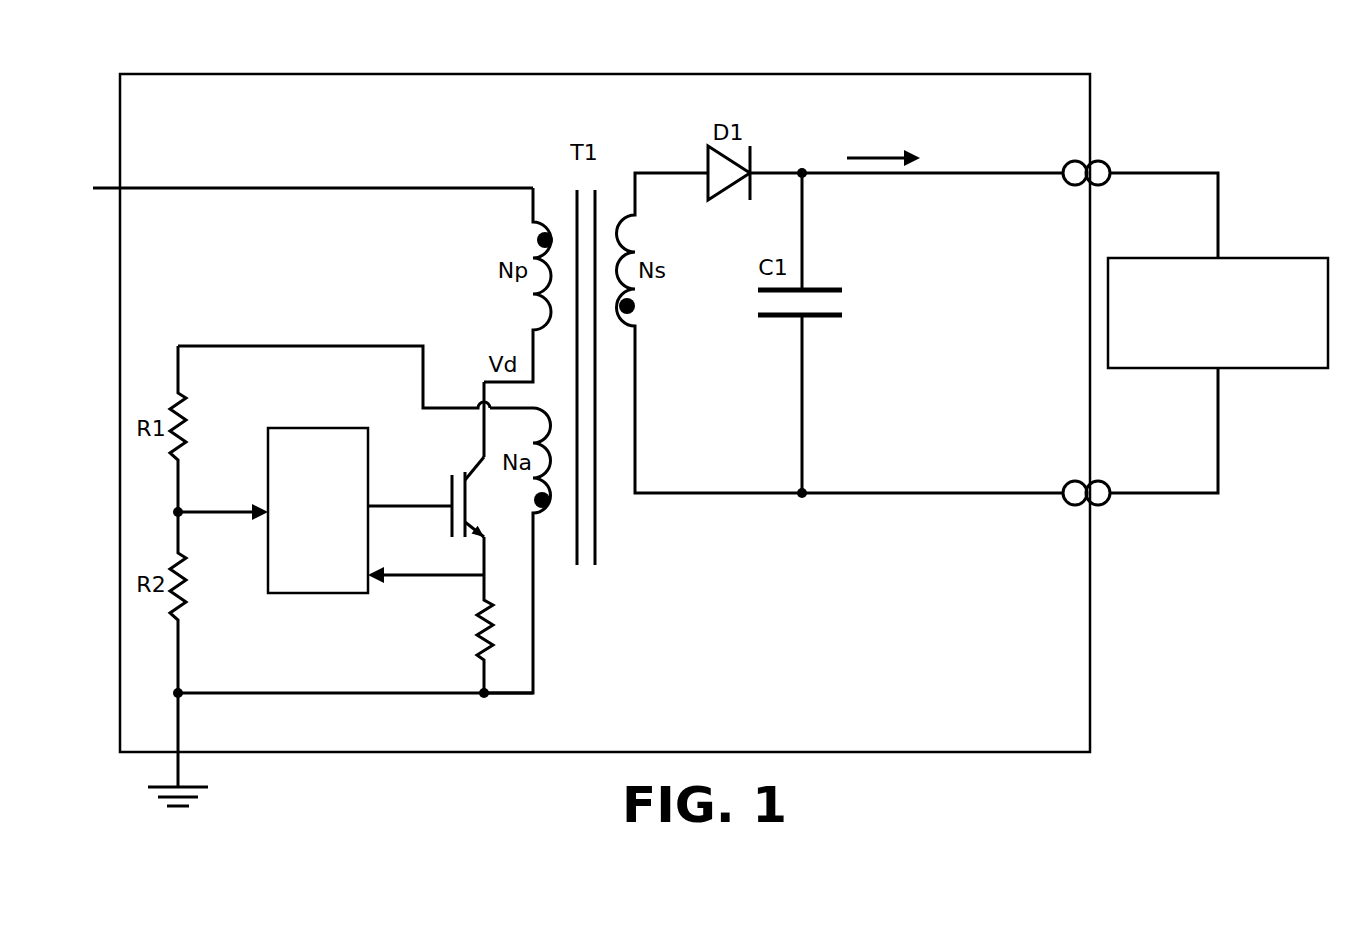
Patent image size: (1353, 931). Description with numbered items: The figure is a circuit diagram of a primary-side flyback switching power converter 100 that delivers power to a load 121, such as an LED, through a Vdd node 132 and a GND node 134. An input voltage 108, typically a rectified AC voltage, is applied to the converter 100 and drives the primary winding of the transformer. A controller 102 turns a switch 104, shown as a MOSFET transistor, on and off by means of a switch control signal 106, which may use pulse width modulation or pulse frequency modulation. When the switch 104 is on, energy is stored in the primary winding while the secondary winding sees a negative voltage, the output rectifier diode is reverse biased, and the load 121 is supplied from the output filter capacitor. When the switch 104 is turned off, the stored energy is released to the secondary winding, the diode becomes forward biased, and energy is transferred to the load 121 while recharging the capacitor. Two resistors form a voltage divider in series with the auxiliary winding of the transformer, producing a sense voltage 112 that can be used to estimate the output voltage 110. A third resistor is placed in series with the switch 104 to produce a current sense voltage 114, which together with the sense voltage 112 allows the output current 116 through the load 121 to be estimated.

The switching power converter 100 is at (605, 413).
The input voltage 108 is at (112, 188).
The controller 102 is at (318, 510).
The switch 104 is at (453, 479).
The switch control signal 106 is at (381, 509).
The sense voltage 112 is at (218, 505).
The current sense voltage 114 is at (418, 572).
The output current 116 is at (881, 123).
The output voltage 110 is at (964, 172).
The Vdd node 132 is at (1102, 162).
The GND node 134 is at (1103, 506).
The load 121 is at (1218, 333).